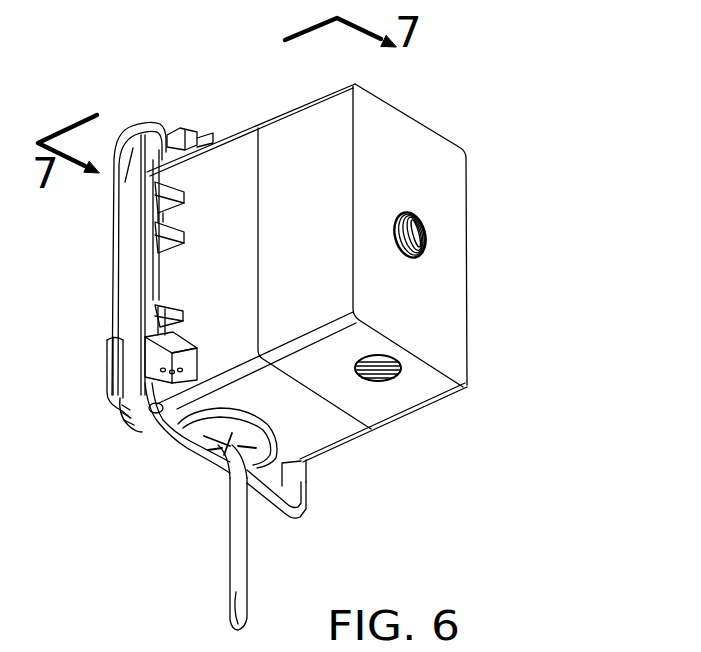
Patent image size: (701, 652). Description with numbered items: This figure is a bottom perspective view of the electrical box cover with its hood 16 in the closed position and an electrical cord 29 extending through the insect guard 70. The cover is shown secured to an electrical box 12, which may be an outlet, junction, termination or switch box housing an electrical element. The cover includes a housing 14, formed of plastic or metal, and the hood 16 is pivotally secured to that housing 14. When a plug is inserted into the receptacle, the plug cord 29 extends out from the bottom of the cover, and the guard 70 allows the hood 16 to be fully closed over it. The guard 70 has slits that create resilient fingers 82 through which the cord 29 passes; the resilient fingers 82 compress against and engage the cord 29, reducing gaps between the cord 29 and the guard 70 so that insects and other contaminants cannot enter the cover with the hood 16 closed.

The electrical box 12 is at (357, 84).
The housing 14 is at (248, 150).
The hood 16 is at (136, 150).
The cord 29 is at (245, 555).
The guard 70 is at (217, 441).
The resilient fingers 82 is at (228, 441).